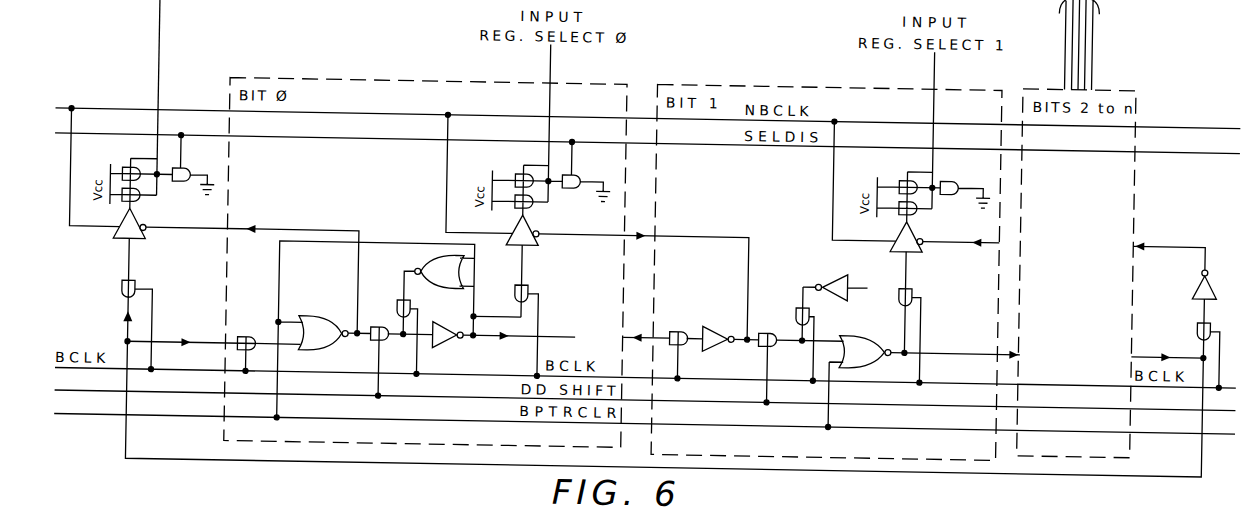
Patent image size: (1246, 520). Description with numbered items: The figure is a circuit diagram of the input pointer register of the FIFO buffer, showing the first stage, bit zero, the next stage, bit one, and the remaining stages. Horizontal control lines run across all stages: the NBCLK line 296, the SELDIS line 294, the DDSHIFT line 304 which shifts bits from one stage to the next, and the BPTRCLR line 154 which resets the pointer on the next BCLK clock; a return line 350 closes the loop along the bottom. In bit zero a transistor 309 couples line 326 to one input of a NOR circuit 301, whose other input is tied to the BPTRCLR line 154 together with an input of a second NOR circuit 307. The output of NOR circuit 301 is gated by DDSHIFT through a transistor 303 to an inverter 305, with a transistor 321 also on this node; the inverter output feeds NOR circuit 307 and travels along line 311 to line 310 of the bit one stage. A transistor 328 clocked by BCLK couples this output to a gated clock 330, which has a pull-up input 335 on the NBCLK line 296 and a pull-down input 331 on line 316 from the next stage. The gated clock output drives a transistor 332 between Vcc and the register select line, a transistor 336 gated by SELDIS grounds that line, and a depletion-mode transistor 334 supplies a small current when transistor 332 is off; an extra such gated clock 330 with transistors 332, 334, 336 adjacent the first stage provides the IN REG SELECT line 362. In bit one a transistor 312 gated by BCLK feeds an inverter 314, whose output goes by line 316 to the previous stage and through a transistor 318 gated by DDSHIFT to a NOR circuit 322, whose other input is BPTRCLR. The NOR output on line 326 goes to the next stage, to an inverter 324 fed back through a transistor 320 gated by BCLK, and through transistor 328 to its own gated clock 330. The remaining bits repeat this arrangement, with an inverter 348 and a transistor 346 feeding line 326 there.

The IN REG SELECT line 362 is at (153, 49).
The transistor 334 is at (121, 166).
The transistor 332 is at (137, 199).
The transistor 336 is at (184, 166).
The pull-down input 331 is at (143, 228).
The gated clock 330 is at (130, 240).
The pull-up input 335 is at (92, 228).
The transistor 328 is at (120, 287).
The line 326 is at (210, 339).
The transistor 309 is at (247, 333).
The NOR circuit 301 is at (322, 313).
The NOR circuit 307 is at (421, 255).
The pass transistor 321 is at (410, 304).
The transistor 303 is at (369, 335).
The inverter 305 is at (441, 341).
The DDSHIFT line 304 is at (346, 390).
The line 311 is at (560, 324).
The line 310 is at (667, 321).
The transistor 312 is at (684, 321).
The inverter 314 is at (725, 330).
The transistor 318 is at (772, 353).
The transistor 320 is at (809, 297).
The inverter 324 is at (838, 263).
The NOR circuit 322 is at (860, 352).
The line 316 is at (736, 225).
The NBCLK line 296 is at (897, 105).
The SELDIS line 294 is at (903, 131).
The inverter 348 is at (1196, 268).
The pass transistor 346 is at (1197, 303).
The return line 350 is at (125, 443).
The BPTRCLR line 154 is at (208, 414).